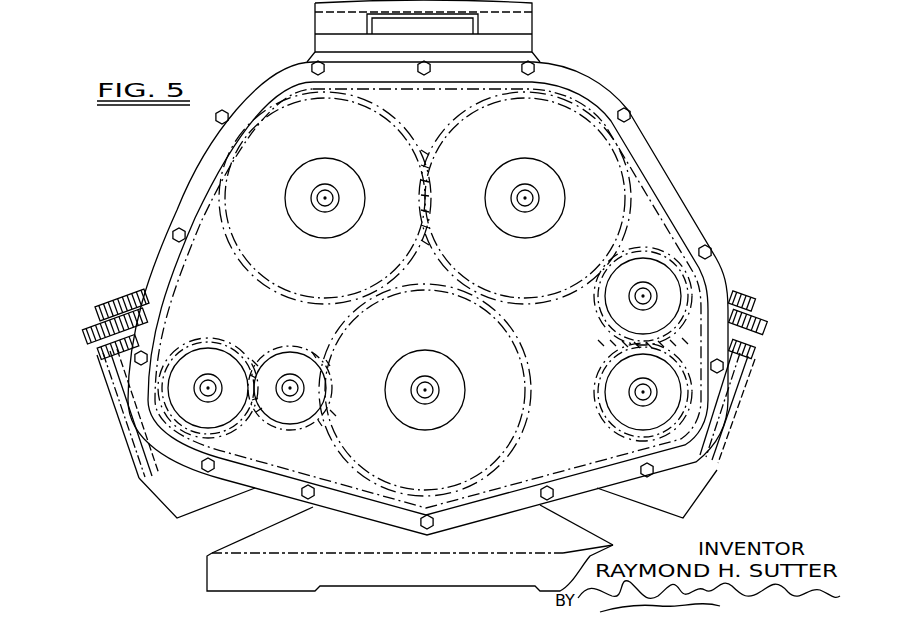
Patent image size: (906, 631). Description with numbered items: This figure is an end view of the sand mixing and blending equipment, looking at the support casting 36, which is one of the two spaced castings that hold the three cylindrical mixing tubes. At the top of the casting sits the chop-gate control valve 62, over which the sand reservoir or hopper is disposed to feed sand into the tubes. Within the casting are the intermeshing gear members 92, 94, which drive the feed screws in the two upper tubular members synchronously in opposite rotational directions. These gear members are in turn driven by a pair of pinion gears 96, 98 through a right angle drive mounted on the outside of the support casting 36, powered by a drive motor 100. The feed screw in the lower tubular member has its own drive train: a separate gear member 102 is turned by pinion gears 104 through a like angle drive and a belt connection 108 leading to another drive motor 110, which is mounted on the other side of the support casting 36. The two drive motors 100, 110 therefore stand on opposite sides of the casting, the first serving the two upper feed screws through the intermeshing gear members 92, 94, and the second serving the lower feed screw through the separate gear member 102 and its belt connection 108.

The support casting 36 is at (567, 535).
The chop-gate control valve 62 is at (522, 28).
The intermeshing gear member 92 is at (370, 117).
The intermeshing gear member 94 is at (610, 95).
The pinion gear 96 is at (622, 308).
The pinion gear 98 is at (622, 438).
The drive motor 100 is at (727, 418).
The separate gear member 102 is at (348, 332).
The pinion gear 104 is at (258, 428).
The belt connection 108 is at (88, 330).
The drive motor 110 is at (127, 420).